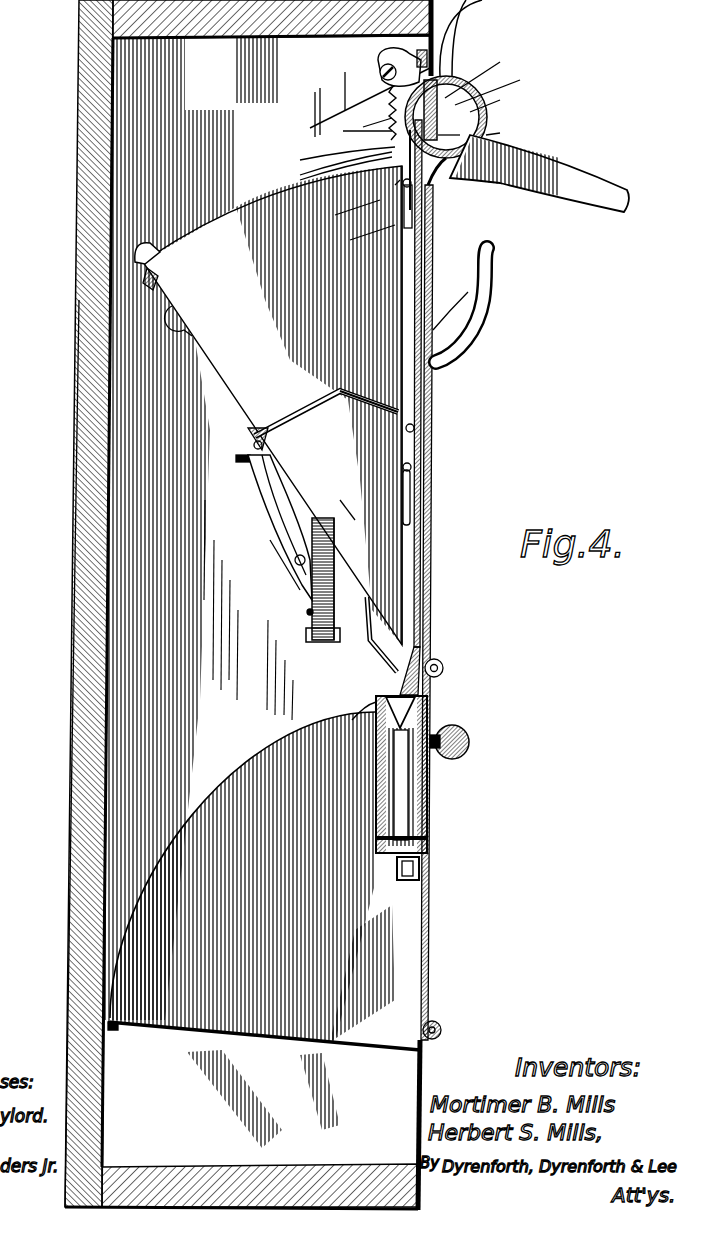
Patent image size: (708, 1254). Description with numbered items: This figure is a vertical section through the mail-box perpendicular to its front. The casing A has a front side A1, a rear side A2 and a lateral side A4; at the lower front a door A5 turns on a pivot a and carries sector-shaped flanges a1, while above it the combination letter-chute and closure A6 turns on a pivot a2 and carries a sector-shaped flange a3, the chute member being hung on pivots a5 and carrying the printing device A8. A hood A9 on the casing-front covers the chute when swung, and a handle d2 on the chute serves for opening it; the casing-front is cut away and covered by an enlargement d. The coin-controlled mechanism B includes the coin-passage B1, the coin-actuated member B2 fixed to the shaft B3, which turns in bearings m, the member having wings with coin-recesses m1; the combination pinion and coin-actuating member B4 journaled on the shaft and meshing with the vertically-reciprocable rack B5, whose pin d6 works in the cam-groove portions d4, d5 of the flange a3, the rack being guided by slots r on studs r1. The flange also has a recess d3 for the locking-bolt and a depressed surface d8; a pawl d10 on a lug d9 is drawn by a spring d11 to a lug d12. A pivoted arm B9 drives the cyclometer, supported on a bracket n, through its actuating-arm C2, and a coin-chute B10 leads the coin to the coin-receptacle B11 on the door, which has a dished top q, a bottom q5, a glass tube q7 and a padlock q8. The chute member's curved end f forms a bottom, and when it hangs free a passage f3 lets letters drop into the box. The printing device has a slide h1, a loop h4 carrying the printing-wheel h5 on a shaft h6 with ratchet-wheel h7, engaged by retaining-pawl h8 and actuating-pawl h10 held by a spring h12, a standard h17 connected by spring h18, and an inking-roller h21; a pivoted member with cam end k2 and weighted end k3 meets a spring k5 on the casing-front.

The casing A is at (228, 604).
The front side A1 is at (418, 1112).
The rear side A2 is at (78, 488).
The lateral side A4 is at (198, 528).
The door A5 is at (430, 882).
The letter-chute A6 is at (424, 405).
The printing device A8 is at (271, 565).
The hood A9 is at (530, 170).
The pivot a is at (438, 1022).
The sector-shaped flanges a1 is at (252, 877).
The pivot a2 is at (441, 662).
The sector-shaped flange a3 is at (272, 405).
The pivots a5 is at (345, 184).
The coin-controlled mechanism B is at (490, 101).
The coin-passage B1 is at (460, 36).
The coin-actuated member B2 is at (478, 75).
The shaft B3 is at (498, 84).
The combination pinion and coin-actuating member B4 is at (366, 131).
The rack B5 is at (401, 300).
The pivoted arm B9 is at (370, 98).
The coin-chute B10 is at (440, 230).
The coin-receptacle B11 is at (405, 788).
The actuating-arm C2 is at (446, 117).
The enlargement d is at (501, 135).
The handle d2 is at (492, 285).
The recess d3 is at (362, 237).
The cam-groove portion d4 is at (369, 388).
The circular cam-groove portion d5 is at (312, 415).
The pin d6 is at (406, 429).
The depressed surface d8 is at (357, 203).
The lug d9 is at (389, 190).
The pawl d10 is at (427, 170).
The spring d11 is at (320, 104).
The lug d12 is at (378, 55).
The curved lower end f is at (370, 656).
The passage f3 is at (400, 690).
The slide h1 is at (150, 288).
The loop h4 is at (332, 626).
The printing-wheel h5 is at (296, 566).
The shaft h6 is at (334, 548).
The ratchet-wheel h7 is at (338, 572).
The retaining-pawl h8 is at (272, 512).
The actuating-pawl h10 is at (345, 512).
The spring h12 is at (252, 447).
The standard h17 is at (236, 458).
The spring h18 is at (231, 477).
The inking-roller h21 is at (308, 614).
The cam-shaped upper end k2 is at (145, 238).
The weighted lower end k3 is at (176, 330).
The spring k5 is at (339, 155).
The bearings m is at (416, 67).
The coin-recesses m1 is at (449, 143).
The bracket n is at (381, 121).
The slide o is at (405, 203).
The top q is at (360, 722).
The bottom q5 is at (376, 838).
The glass tube q7 is at (428, 815).
The padlock q8 is at (396, 870).
The slots r is at (402, 496).
The studs r1 is at (402, 468).